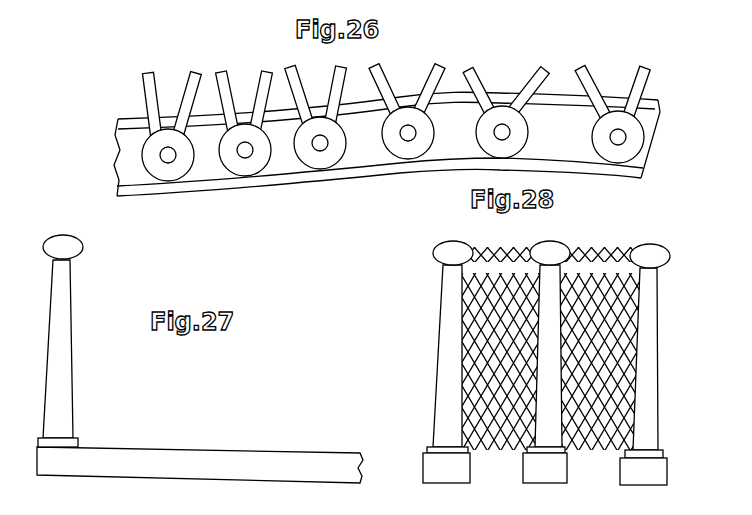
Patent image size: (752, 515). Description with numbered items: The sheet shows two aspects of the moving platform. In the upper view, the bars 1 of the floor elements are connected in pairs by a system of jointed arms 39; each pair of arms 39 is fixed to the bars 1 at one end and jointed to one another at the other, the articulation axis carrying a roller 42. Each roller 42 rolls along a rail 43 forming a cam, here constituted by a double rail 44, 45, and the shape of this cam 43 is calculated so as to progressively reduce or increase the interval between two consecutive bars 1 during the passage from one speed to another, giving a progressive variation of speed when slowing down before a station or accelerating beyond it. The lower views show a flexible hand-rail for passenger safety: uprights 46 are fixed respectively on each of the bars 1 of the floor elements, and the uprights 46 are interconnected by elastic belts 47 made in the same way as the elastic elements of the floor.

In FIG. 27, the bar 1 is at (175, 455).
In FIG. 28, the bar 1 is at (627, 478).
In FIG. 26, the jointed arm 39 is at (183, 108).
In FIG. 26, the roller 42 is at (413, 153).
In FIG. 26, the rail forming a cam 43 is at (189, 185).
In FIG. 26, the rail of the double rail 44 is at (354, 172).
In FIG. 26, the rail of the double rail 45 is at (278, 116).
In FIG. 27, the upright 46 is at (73, 379).
In FIG. 28, the upright 46 is at (448, 335).
In FIG. 28, the elastic belt 47 is at (477, 370).